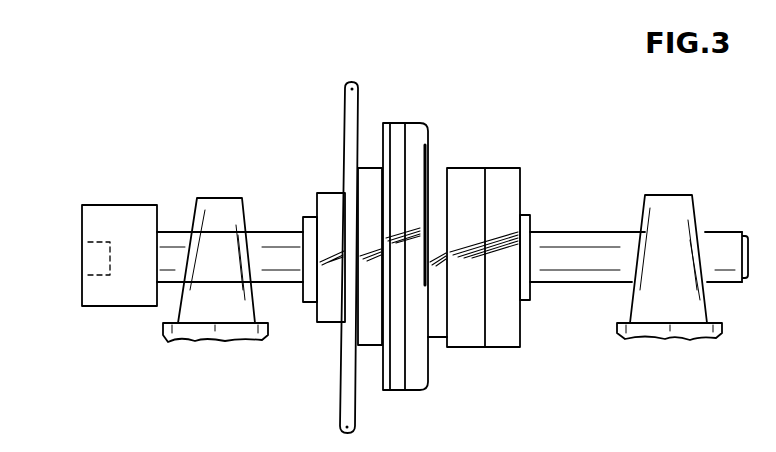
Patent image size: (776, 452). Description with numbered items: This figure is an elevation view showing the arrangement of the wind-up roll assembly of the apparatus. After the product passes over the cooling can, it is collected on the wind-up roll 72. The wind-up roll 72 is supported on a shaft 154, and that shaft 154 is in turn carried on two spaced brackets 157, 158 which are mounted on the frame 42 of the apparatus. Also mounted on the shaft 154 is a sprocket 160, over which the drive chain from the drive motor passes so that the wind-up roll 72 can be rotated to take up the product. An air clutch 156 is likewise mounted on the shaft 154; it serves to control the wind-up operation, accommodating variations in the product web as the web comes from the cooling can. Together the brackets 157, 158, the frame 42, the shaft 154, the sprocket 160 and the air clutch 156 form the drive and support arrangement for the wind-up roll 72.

The wind-up roll 72 is at (130, 222).
The shaft 154 is at (273, 248).
The air clutch 156 is at (411, 130).
The bracket 157 is at (668, 201).
The bracket 158 is at (215, 212).
The sprocket 160 is at (351, 112).
The frame 42 is at (240, 335).